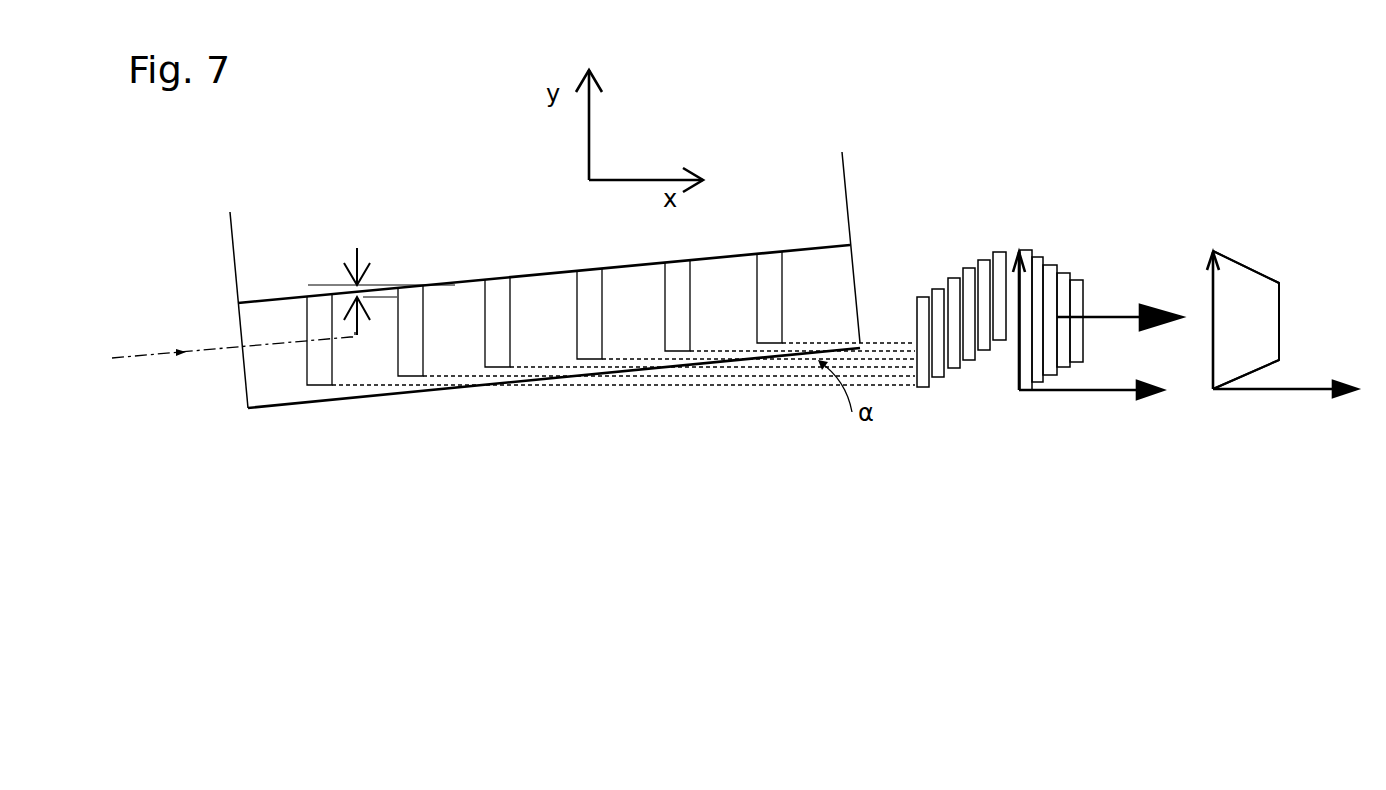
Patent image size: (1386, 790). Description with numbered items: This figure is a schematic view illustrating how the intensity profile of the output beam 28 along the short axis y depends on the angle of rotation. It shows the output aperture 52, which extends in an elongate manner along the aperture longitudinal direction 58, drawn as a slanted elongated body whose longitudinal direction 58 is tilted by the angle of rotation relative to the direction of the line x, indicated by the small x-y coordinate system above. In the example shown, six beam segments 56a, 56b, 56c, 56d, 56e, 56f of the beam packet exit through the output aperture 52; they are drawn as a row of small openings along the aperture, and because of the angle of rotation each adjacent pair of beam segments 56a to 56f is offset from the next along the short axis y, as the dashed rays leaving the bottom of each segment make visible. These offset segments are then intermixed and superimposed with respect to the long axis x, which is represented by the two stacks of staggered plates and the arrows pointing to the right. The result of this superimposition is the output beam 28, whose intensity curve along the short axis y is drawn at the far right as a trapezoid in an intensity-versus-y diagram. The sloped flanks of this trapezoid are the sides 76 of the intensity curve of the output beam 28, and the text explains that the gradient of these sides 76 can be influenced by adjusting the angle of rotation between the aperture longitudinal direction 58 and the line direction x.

The output aperture 52 is at (833, 285).
The beam segment 56a is at (320, 370).
The beam segment 56b is at (410, 370).
The beam segment 56c is at (502, 348).
The beam segment 56d is at (588, 350).
The beam segment 56e is at (678, 333).
The beam segment 56f is at (773, 333).
The aperture longitudinal direction 58 is at (153, 355).
The sides of the intensity curve 76 is at (1257, 270).
The output beam 28 is at (1257, 320).